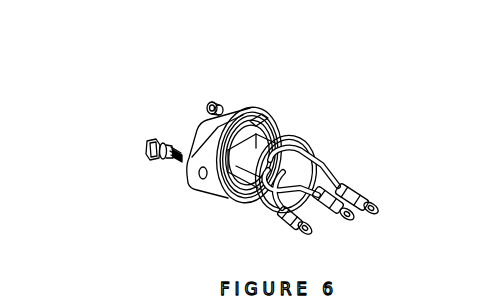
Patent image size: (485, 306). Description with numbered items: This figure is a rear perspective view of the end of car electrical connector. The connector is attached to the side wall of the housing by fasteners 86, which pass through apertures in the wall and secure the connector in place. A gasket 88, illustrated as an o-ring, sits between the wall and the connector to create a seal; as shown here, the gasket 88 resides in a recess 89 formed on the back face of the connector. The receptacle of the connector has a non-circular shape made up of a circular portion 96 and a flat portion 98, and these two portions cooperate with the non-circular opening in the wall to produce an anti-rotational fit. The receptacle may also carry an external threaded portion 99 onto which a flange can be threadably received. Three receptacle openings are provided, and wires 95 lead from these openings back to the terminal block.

The fasteners 86 is at (210, 99).
The gasket 88 is at (293, 163).
The recess 89 is at (222, 205).
The wires 95 is at (333, 169).
The circular portion 96 is at (313, 142).
The flat portion 98 is at (266, 146).
The external threaded portion 99 is at (257, 120).